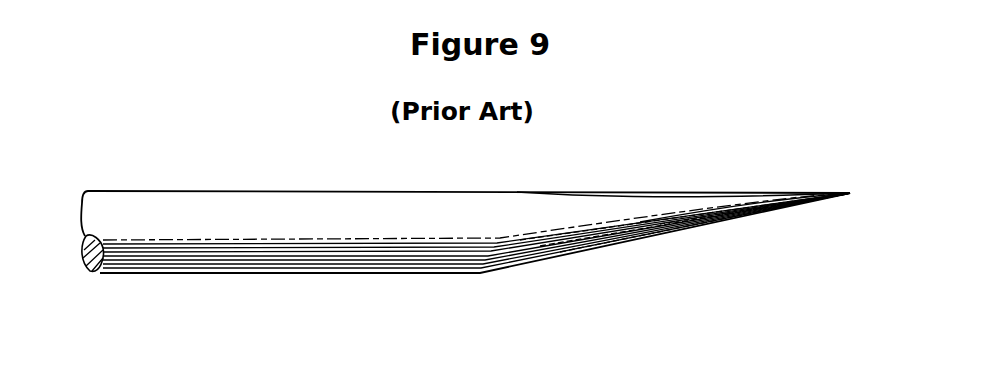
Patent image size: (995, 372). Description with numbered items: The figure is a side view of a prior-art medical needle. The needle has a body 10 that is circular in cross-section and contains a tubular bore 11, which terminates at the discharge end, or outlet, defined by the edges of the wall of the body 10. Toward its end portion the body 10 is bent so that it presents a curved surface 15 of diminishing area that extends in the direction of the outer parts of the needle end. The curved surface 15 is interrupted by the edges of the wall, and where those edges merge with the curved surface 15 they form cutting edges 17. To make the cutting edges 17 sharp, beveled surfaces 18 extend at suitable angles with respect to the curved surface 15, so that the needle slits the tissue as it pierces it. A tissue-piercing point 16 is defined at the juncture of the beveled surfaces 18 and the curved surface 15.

The body 10 is at (236, 198).
The tubular bore 11 is at (86, 262).
The curved surface 15 is at (720, 224).
The tissue-piercing point 16 is at (850, 193).
The cutting edges 17 is at (715, 190).
The beveled surfaces 18 is at (768, 195).